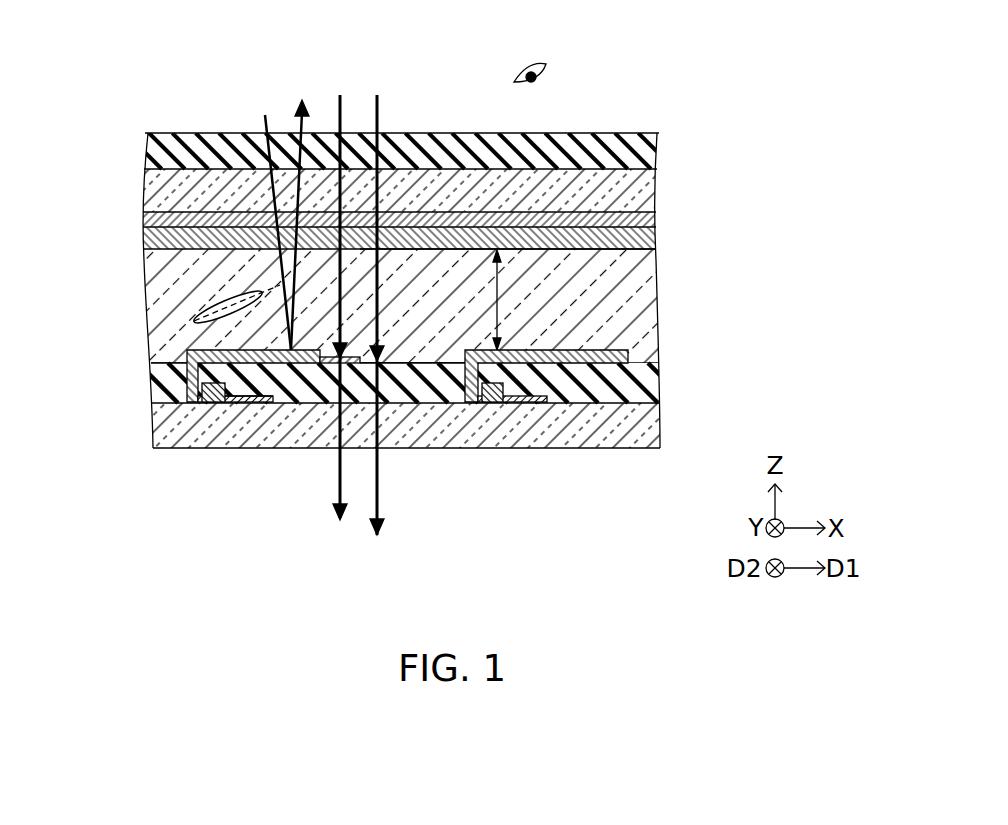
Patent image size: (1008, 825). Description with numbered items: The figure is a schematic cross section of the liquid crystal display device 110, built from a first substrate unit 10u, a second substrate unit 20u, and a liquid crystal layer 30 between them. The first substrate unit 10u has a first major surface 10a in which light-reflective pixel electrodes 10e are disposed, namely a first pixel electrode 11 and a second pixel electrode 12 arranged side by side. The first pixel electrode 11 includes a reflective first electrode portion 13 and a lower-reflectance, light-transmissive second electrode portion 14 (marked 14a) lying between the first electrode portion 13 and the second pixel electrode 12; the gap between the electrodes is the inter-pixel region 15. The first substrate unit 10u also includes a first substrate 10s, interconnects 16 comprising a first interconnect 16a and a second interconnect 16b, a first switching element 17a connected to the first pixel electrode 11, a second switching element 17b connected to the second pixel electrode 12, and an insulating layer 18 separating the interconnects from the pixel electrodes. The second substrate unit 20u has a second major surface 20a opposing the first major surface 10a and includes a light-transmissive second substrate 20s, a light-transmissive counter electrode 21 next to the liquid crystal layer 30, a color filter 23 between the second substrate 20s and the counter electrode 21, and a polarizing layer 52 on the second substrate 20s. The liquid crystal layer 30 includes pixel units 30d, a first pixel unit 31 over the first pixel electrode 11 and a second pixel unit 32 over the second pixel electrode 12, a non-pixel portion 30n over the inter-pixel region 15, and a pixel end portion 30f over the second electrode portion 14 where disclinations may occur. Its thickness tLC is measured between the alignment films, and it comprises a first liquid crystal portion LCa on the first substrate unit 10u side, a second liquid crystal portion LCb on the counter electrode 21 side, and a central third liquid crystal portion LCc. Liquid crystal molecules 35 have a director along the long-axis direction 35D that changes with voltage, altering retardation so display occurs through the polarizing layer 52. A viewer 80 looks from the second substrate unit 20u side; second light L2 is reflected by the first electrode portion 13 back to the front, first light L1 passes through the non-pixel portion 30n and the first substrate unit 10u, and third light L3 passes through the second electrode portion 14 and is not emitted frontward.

The liquid crystal display device 110 is at (778, 140).
The polarizing layer 52 is at (168, 162).
The second substrate unit 20u is at (740, 185).
The second substrate 20s is at (600, 196).
The color filter 23 is at (216, 216).
The second major surface 20a is at (202, 247).
The counter electrode 21 is at (600, 240).
The liquid crystal layer 30 is at (740, 267).
The second liquid crystal portion LCb is at (580, 259).
The third liquid crystal portion LCc is at (580, 300).
The first liquid crystal portion LCa is at (582, 340).
The pixel units 30d is at (366, 406).
The first pixel unit 31 is at (260, 333).
The second pixel unit 32 is at (554, 330).
The pixel end portion 30f is at (360, 345).
The non-pixel portion 30n is at (415, 330).
The thickness of the liquid crystal layer tLC is at (500, 293).
The liquid crystal molecules 35 is at (228, 300).
The long-axis direction 35D is at (196, 322).
The first substrate unit 10u is at (740, 347).
The first substrate 10s is at (630, 428).
The insulating layer 18 is at (622, 386).
The first major surface 10a is at (190, 364).
The pixel electrodes 10e is at (401, 457).
The second pixel electrode 12 is at (630, 356).
The first pixel electrode 11 is at (232, 349).
The first electrode portion 13 is at (243, 398).
The second electrode portion 14 is at (320, 359).
The channel region 14a is at (310, 436).
The inter-pixel region 15 is at (428, 360).
The interconnects 16 is at (379, 485).
The first interconnect 16a is at (248, 403).
The second interconnect 16b is at (528, 402).
The first switching element 17a is at (215, 398).
The second switching element 17b is at (490, 385).
The first light L1 is at (383, 109).
The second light L2 is at (262, 114).
The third light L3 is at (344, 99).
The viewer 80 is at (549, 74).